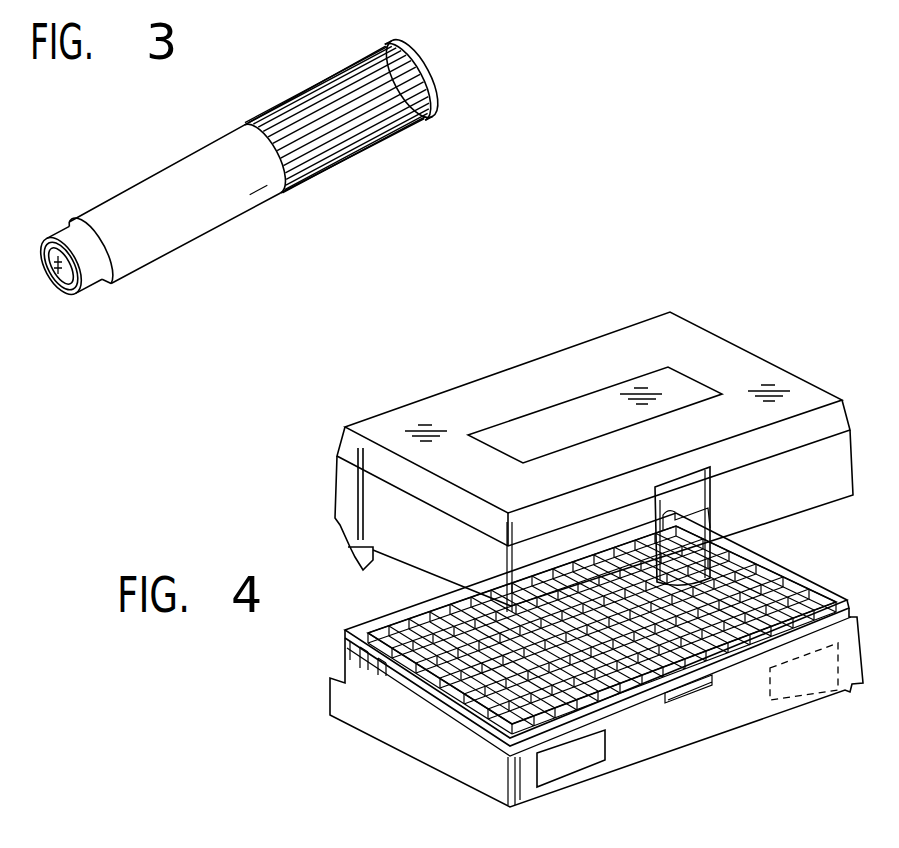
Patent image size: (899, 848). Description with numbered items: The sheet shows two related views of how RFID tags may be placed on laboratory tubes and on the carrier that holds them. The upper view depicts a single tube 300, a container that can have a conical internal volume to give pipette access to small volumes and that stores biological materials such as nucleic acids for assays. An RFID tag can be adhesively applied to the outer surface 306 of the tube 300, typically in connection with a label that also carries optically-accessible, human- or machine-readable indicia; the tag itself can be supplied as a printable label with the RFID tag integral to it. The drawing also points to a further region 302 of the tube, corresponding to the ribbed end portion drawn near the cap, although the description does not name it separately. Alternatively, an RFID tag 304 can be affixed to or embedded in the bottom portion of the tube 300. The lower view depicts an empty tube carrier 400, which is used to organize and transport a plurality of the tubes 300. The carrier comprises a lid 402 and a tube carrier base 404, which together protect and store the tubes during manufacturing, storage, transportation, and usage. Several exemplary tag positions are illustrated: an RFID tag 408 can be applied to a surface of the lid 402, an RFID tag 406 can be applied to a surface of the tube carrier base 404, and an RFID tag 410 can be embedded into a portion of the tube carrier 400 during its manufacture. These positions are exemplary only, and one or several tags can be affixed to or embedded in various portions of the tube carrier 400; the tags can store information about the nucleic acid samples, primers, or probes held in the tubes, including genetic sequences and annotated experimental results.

In FIG. 3, the tube 300 is at (331, 201).
In FIG. 3, the ribbed grip portion 302 is at (320, 90).
In FIG. 3, the RFID tag 304 is at (52, 270).
In FIG. 3, the outer surface 306 is at (165, 178).
In FIG. 4, the tube carrier 400 is at (683, 273).
In FIG. 4, the lid 402 is at (466, 398).
In FIG. 4, the tube carrier base 404 is at (676, 728).
In FIG. 4, the RFID tag 406 is at (562, 758).
In FIG. 4, the RFID tag 408 is at (600, 398).
In FIG. 4, the RFID tag 410 is at (805, 676).